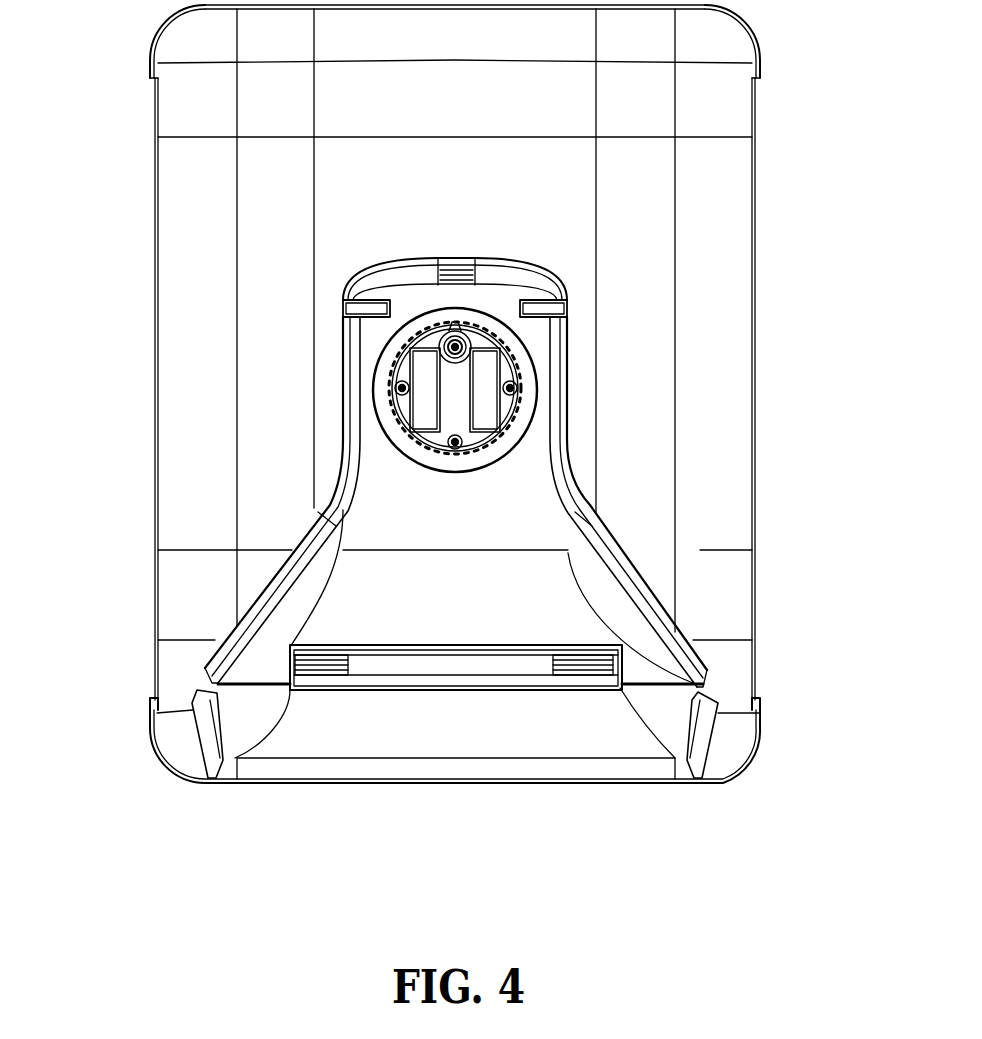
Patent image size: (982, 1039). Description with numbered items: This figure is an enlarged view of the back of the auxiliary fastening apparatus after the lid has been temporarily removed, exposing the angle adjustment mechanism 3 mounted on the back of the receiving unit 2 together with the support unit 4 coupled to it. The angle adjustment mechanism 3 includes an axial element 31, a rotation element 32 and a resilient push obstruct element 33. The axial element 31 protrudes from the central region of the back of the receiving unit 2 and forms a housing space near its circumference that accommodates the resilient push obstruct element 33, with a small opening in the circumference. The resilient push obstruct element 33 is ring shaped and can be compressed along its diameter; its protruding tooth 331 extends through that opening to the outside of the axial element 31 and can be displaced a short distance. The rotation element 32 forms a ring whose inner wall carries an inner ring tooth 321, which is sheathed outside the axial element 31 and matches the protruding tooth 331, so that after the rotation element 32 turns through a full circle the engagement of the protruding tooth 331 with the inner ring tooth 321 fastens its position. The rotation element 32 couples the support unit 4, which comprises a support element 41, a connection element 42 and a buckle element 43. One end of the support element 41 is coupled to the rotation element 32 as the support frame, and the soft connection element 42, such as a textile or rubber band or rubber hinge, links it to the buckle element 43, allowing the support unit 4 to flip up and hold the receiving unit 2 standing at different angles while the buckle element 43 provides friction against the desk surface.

The receiving unit 2 is at (703, 390).
The angle adjustment mechanism 3 is at (78, 243).
The axial element 31 is at (402, 430).
The rotation element 32 is at (420, 308).
The resilient push obstruct element 33 is at (440, 357).
The inner ring tooth 321 is at (515, 413).
The protruding tooth 331 is at (453, 327).
The support unit 4 is at (85, 525).
The support element 41 is at (378, 557).
The connection element 42 is at (328, 667).
The buckle element 43 is at (337, 738).